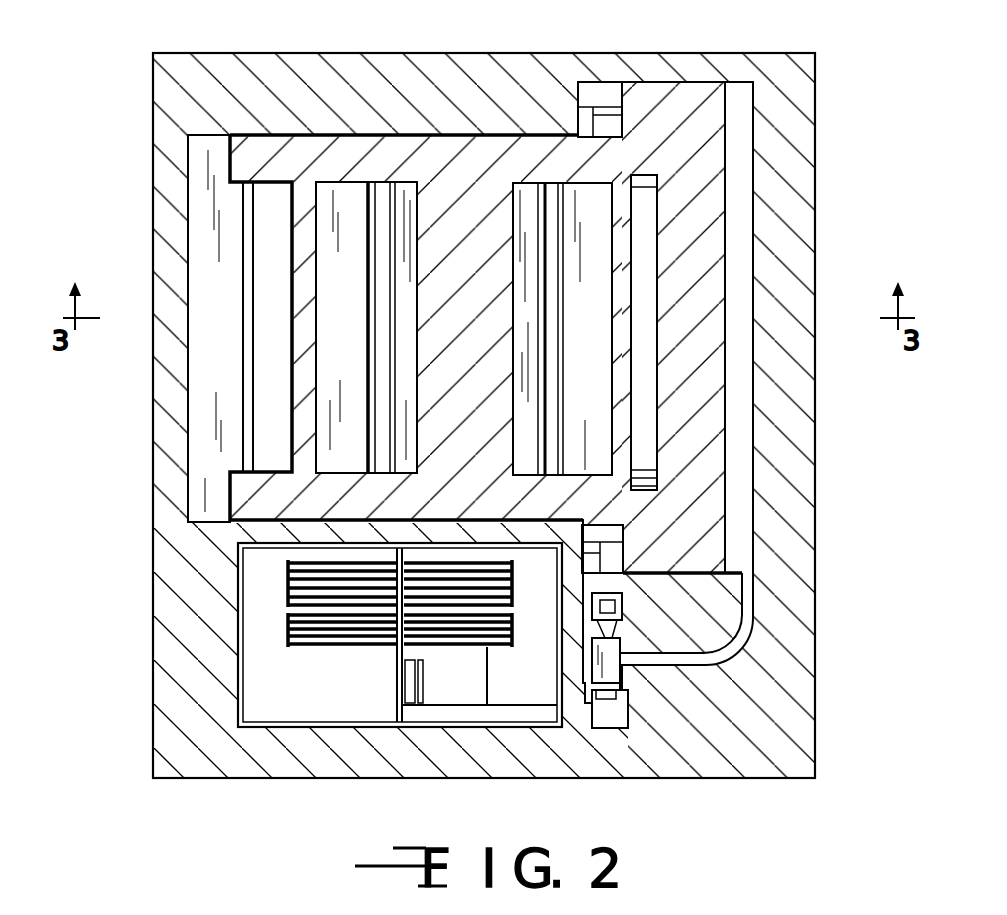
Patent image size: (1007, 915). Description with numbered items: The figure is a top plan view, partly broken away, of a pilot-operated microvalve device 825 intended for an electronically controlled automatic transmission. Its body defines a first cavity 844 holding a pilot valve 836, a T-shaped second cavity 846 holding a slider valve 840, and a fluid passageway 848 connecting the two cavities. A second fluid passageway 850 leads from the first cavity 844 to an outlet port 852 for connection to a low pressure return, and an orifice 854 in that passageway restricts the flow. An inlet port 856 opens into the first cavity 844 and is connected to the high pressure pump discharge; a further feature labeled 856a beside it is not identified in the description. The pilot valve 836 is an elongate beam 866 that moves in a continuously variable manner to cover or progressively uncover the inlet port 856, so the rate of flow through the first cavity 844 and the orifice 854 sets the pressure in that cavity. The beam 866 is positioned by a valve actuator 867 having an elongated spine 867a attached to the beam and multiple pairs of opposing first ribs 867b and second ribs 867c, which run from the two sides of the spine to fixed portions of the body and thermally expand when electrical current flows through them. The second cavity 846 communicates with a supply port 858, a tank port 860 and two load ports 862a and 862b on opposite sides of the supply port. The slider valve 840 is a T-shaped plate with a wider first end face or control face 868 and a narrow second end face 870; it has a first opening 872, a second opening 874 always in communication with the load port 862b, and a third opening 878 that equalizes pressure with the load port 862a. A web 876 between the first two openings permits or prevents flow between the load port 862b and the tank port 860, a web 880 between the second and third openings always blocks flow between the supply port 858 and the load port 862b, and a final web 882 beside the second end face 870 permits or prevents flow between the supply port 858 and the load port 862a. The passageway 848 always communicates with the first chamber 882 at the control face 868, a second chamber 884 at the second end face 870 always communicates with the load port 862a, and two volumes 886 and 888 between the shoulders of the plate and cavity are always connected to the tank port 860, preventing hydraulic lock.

The microvalve device 825 is at (122, 467).
The pilot valve 836 is at (430, 716).
The slider valve 840 is at (712, 447).
The first cavity 844 is at (614, 671).
The second cavity 846 is at (740, 214).
The fluid passageway 848 is at (750, 602).
The second fluid passageway 850 is at (618, 634).
The outlet port 852 is at (620, 572).
The orifice 854 is at (612, 641).
The inlet port 856 is at (618, 680).
The coil frame 856a is at (425, 685).
The supply port 858 is at (375, 291).
The tank port 860 is at (646, 254).
The load port 862a is at (262, 290).
The load port 862b is at (557, 228).
The elongate beam 866 is at (597, 713).
The valve actuator 867 is at (258, 612).
The elongated spine 867a is at (297, 604).
The first ribs 867b is at (350, 644).
The second ribs 867c is at (463, 652).
The first end face 868 is at (724, 156).
The second end face 870 is at (292, 360).
The first opening 872 is at (638, 362).
The second opening 874 is at (520, 446).
The web 876 is at (622, 452).
The third opening 878 is at (413, 393).
The web 880 is at (475, 227).
The web 882 is at (740, 273).
The second chamber 884 is at (212, 382).
The volume 886 is at (597, 122).
The volume 888 is at (610, 526).